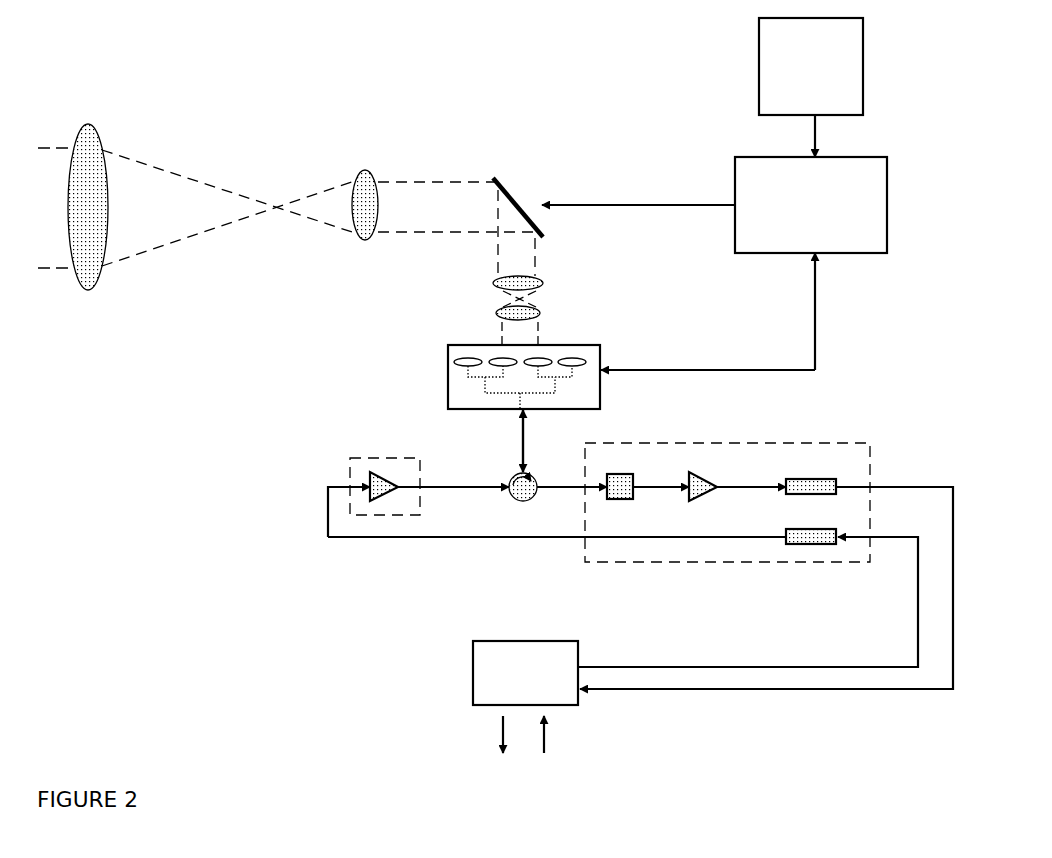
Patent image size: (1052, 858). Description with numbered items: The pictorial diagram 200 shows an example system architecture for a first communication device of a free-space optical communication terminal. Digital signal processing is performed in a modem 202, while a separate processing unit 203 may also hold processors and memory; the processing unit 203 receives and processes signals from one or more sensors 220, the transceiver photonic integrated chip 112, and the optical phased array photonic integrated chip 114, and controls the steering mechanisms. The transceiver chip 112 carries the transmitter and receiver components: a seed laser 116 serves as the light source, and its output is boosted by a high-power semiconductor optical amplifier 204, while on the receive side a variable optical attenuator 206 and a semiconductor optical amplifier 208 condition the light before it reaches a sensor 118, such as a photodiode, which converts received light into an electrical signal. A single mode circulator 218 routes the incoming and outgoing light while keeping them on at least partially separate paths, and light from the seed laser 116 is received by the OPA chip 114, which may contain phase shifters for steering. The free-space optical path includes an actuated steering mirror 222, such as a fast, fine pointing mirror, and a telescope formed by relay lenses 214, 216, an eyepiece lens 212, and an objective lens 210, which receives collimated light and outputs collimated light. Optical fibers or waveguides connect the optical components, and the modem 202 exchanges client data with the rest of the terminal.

The pictorial diagram 200 is at (86, 767).
The modem 202 is at (563, 702).
The processing unit 203 is at (714, 263).
The high-power semiconductor optical amplifier 204 is at (350, 478).
The variable optical attenuator 206 is at (603, 474).
The semiconductor optical amplifier 208 is at (706, 472).
The objective lens 210 is at (98, 127).
The eyepiece lens 212 is at (372, 172).
The relay lens 214 is at (545, 283).
The relay lens 216 is at (542, 315).
The single mode circulator 218 is at (528, 475).
The sensors 220 is at (811, 87).
The actuated/steering mirror 222 is at (503, 178).
The transceiver photonic integrated chip 112 is at (735, 443).
The optical phased array photonic integrated chip 114 is at (447, 374).
The seed laser 116 is at (800, 529).
The sensor 118 is at (800, 479).